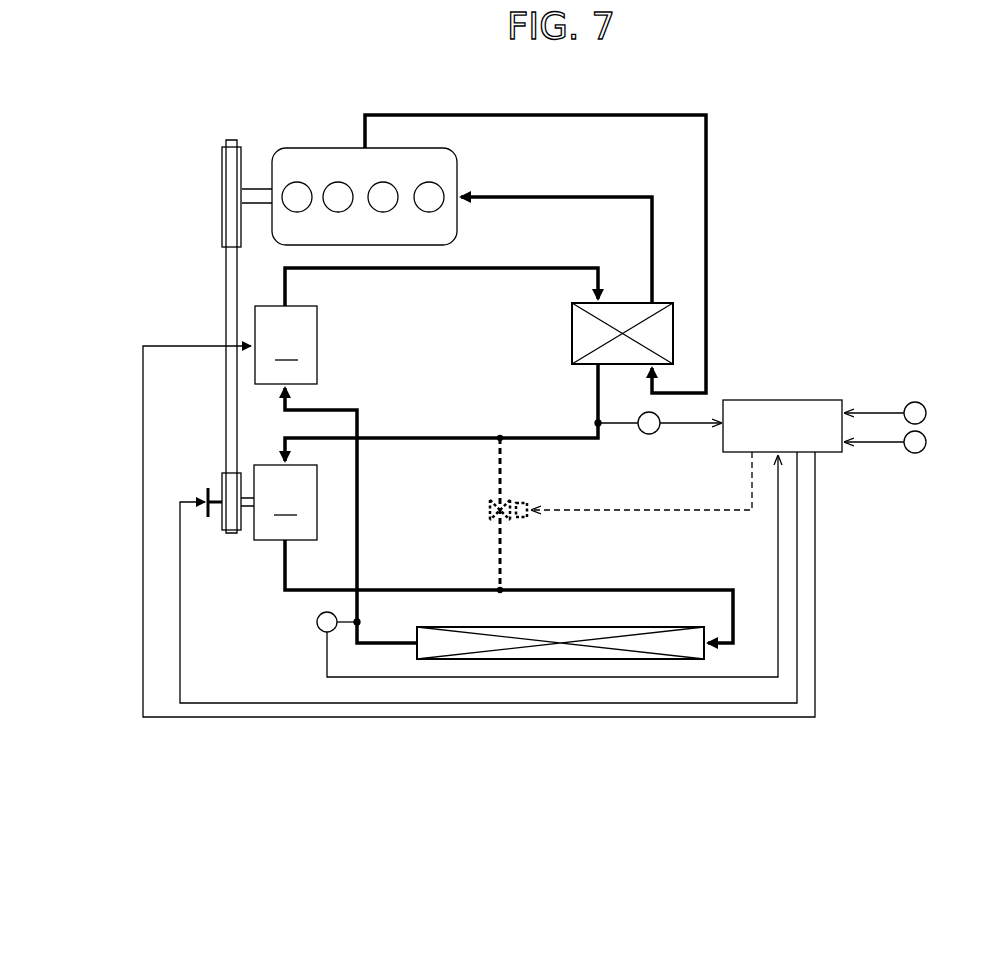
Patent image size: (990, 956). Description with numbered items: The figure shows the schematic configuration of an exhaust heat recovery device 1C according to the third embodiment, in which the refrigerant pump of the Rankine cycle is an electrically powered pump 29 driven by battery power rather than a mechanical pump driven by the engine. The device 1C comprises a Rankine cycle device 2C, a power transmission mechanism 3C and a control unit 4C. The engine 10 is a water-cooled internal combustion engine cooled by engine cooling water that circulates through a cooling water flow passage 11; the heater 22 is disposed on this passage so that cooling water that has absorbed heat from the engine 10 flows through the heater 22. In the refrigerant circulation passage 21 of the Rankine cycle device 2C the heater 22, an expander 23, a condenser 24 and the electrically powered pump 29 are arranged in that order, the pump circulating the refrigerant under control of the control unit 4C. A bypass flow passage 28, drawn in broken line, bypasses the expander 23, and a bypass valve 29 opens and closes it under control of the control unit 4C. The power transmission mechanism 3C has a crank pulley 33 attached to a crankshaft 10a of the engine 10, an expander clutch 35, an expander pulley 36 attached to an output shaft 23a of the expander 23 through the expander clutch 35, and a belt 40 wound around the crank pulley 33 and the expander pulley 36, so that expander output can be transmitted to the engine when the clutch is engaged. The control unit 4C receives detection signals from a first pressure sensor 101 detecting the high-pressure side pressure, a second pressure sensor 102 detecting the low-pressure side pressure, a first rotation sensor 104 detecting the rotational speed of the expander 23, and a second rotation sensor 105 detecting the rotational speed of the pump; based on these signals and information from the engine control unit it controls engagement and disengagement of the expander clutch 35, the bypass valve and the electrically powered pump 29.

The exhaust heat recovery device 1C is at (826, 136).
The Rankine cycle device 2C is at (245, 600).
The power transmission mechanism 3C is at (149, 234).
The control unit 4C is at (790, 400).
The engine 10 is at (457, 160).
The crankshaft 10a is at (260, 204).
The cooling water flow passage 11 is at (706, 190).
The refrigerant circulation passage 21 is at (503, 268).
The heater 22 is at (613, 301).
The expander 23 is at (285, 502).
The output shaft 23a is at (246, 507).
The condenser 24 is at (560, 627).
The bypass flow passage 28 is at (497, 475).
The electrically powered pump / bypass valve 29 is at (490, 514).
The crank pulley 33 is at (221, 176).
The expander clutch 35 is at (208, 519).
The expander pulley 36 is at (222, 486).
The belt 40 is at (226, 297).
The first pressure sensor 101 is at (647, 434).
The second pressure sensor 102 is at (317, 622).
The first rotation sensor 104 is at (916, 453).
The second rotation sensor 105 is at (912, 402).